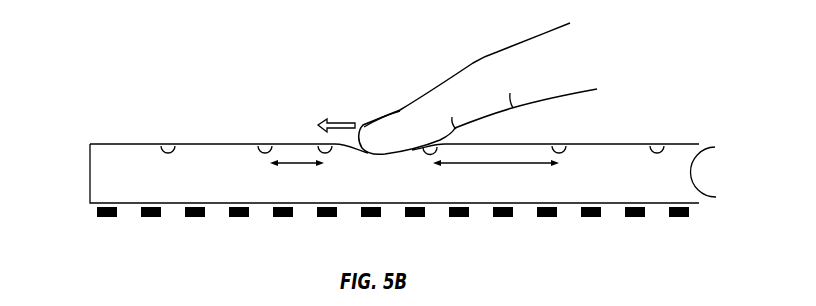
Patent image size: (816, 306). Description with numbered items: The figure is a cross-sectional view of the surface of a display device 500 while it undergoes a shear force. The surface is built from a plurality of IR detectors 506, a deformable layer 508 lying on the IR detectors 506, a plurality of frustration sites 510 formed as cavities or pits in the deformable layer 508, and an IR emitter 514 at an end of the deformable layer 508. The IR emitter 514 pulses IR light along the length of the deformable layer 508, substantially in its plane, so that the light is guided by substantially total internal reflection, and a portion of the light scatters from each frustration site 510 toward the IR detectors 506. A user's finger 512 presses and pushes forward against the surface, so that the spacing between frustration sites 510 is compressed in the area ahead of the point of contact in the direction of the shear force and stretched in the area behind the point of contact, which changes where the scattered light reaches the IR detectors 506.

The display device 500 is at (702, 77).
The IR detectors 506 is at (458, 218).
The deformable layer 508 is at (78, 177).
The frustration sites 510 is at (169, 145).
The user's finger 512 is at (422, 97).
The IR emitter 514 is at (700, 173).